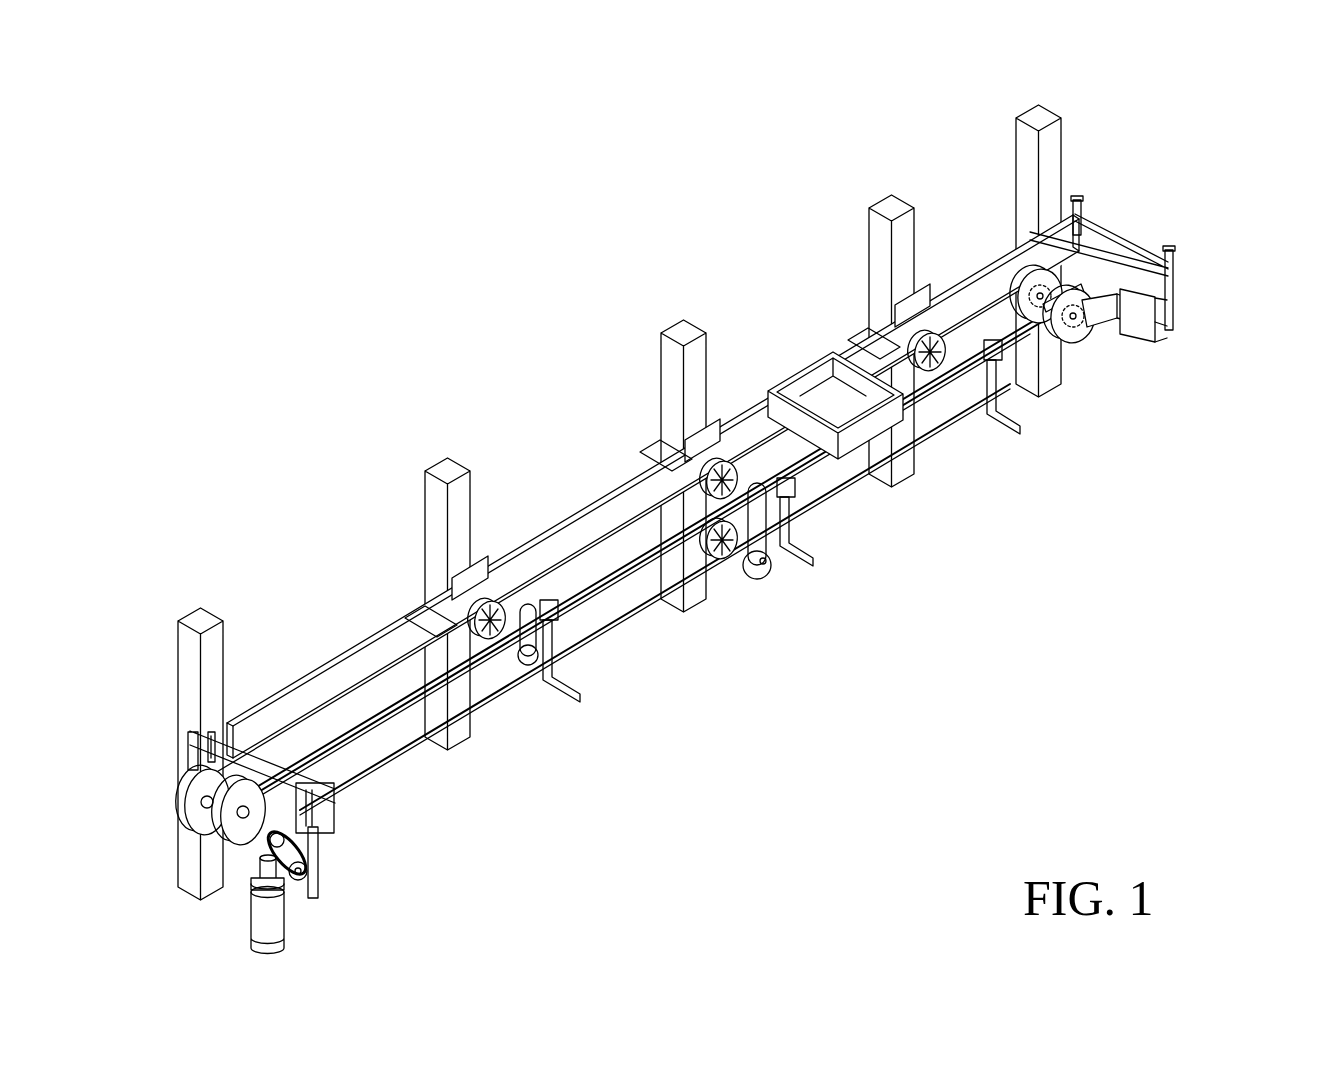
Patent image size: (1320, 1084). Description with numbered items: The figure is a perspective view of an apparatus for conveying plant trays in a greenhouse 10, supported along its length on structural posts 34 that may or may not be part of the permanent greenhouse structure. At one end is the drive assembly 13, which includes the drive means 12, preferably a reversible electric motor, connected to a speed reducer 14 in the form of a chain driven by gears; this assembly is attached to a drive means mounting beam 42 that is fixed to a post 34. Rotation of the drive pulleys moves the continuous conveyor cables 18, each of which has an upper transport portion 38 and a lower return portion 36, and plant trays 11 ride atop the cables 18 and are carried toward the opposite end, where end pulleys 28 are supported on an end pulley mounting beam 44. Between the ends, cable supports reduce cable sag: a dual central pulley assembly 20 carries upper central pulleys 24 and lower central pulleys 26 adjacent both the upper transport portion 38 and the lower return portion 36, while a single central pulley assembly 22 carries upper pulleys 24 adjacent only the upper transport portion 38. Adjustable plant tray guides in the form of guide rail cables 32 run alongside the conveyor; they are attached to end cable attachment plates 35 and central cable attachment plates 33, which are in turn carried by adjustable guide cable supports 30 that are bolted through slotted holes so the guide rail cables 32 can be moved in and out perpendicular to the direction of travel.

The apparatus for conveying plant trays in a greenhouse 10 is at (885, 600).
The plant tray 11 is at (805, 383).
The drive means 12 is at (302, 925).
The drive assembly 13 is at (288, 908).
The speed reducer 14 is at (300, 848).
The continuous conveyor cable 18 is at (343, 732).
The dual central pulley assembly 20 is at (813, 557).
The single central pulley assembly 22 is at (582, 698).
The upper central pulley 24 is at (925, 335).
The lower central pulley 26 is at (757, 580).
The end pulley 28 is at (1068, 268).
The adjustable guide cable support 30 is at (702, 447).
The guide rail cable 32 is at (320, 668).
The central cable attachment plate 33 is at (663, 452).
The structural post 34 is at (1058, 140).
The end cable attachment plate 35 is at (1085, 198).
The lower return portion 36 is at (650, 570).
The upper transport portion 38 is at (638, 620).
The drive means mounting beam 42 is at (243, 743).
The end pulley mounting beam 44 is at (1162, 310).